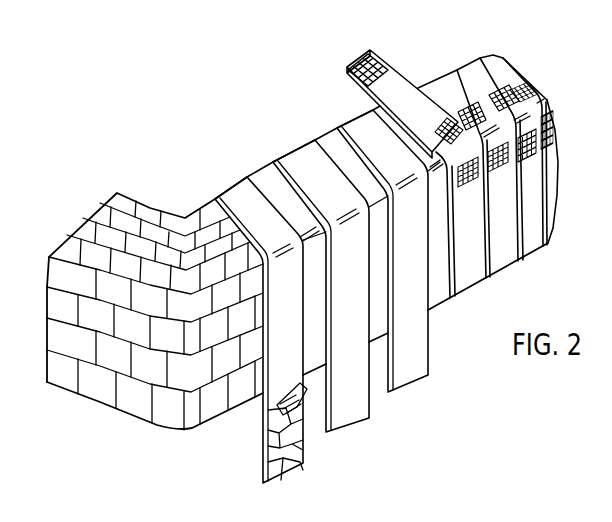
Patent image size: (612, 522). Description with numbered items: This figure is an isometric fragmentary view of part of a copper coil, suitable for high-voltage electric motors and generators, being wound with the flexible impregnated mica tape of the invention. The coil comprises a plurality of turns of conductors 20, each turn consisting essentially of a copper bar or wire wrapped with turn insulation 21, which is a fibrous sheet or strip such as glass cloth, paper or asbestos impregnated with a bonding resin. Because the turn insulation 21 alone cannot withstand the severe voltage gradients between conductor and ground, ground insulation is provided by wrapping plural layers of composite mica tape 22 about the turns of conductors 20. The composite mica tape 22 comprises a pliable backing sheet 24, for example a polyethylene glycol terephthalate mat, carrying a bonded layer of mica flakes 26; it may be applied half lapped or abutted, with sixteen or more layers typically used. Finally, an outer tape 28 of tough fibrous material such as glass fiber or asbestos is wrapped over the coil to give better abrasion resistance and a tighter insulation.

The conductors 20 is at (118, 193).
The turn insulation 21 is at (150, 197).
The composite mica tape 22 is at (262, 432).
The pliable backing sheet 24 is at (300, 400).
The layer of mica flakes 26 is at (289, 465).
The outer tape 28 is at (393, 77).